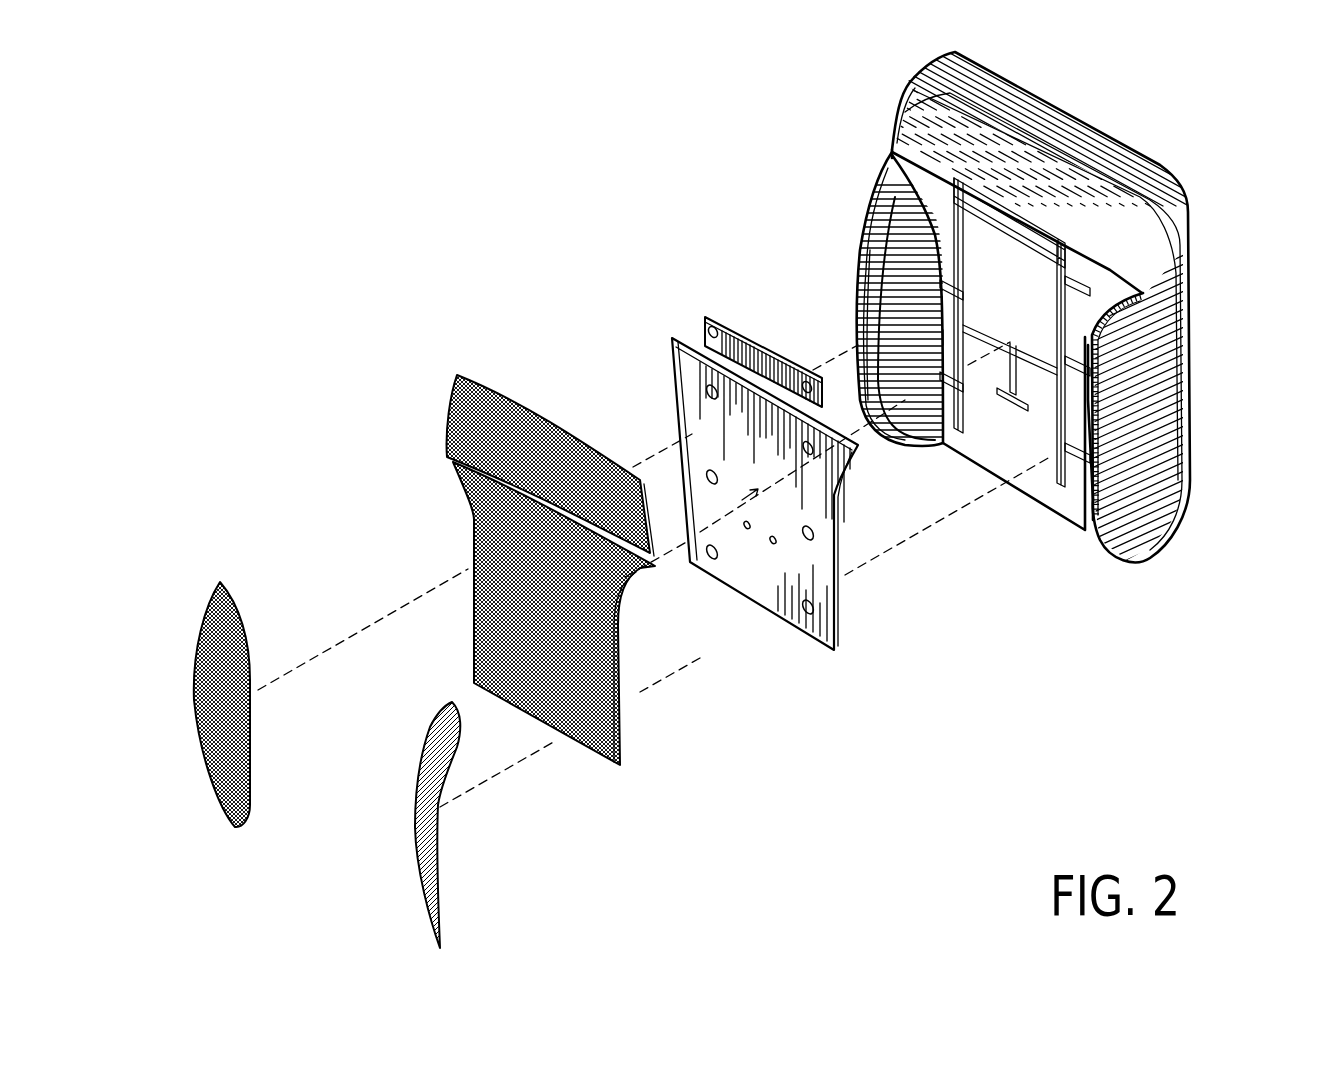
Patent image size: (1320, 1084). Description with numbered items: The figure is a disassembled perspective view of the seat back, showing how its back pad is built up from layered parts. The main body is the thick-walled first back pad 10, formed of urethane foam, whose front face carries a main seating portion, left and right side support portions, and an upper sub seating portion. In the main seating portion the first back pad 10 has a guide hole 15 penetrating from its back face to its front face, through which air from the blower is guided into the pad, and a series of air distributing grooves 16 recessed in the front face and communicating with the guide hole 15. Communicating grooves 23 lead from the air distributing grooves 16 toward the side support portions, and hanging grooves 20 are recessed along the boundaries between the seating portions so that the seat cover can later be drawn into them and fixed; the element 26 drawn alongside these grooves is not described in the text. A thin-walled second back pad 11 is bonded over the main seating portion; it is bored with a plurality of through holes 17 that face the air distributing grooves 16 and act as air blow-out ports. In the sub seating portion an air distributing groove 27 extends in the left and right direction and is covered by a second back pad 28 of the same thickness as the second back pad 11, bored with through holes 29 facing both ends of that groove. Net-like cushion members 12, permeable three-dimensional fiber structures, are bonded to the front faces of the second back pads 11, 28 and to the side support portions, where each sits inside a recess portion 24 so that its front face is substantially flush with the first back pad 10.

The first back pad 10 is at (1158, 186).
The second back pad 11 is at (712, 422).
The net-like cushion member 12 is at (483, 523).
The guide hole 15 is at (936, 250).
The air distributing groove 16 is at (967, 337).
The through hole 17 is at (812, 533).
The hanging groove 20 is at (1110, 270).
The communicating groove 23 is at (1130, 340).
The recess portion 24 is at (970, 280).
The side frame members 26 is at (957, 190).
The air distributing groove 27 is at (990, 203).
The second back pad 28 is at (742, 347).
The through hole 29 is at (703, 330).